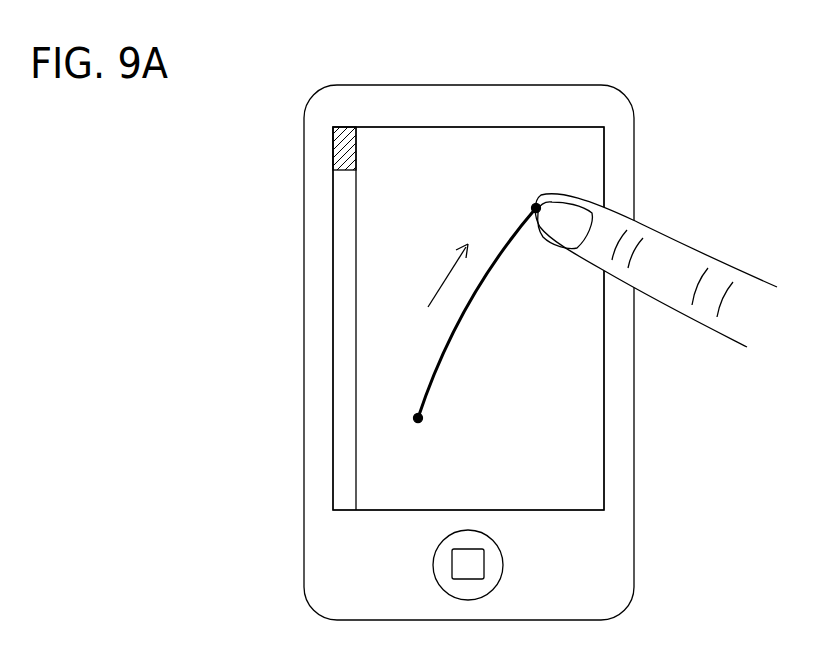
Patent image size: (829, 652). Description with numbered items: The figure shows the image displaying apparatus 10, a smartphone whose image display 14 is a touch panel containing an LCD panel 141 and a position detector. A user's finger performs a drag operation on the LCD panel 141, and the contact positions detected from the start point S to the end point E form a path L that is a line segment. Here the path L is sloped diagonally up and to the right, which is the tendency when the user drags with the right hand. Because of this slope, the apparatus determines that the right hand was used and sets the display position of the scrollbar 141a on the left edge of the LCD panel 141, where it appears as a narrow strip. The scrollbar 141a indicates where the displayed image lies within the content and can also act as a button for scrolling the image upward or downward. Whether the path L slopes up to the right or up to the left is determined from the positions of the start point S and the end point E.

The image displaying apparatus 10 is at (657, 76).
The image display 14 is at (332, 347).
The LCD panel 141 is at (373, 455).
The scrollbar 141a is at (348, 223).
The end point E is at (531, 204).
The start point S is at (423, 420).
The path L is at (457, 338).